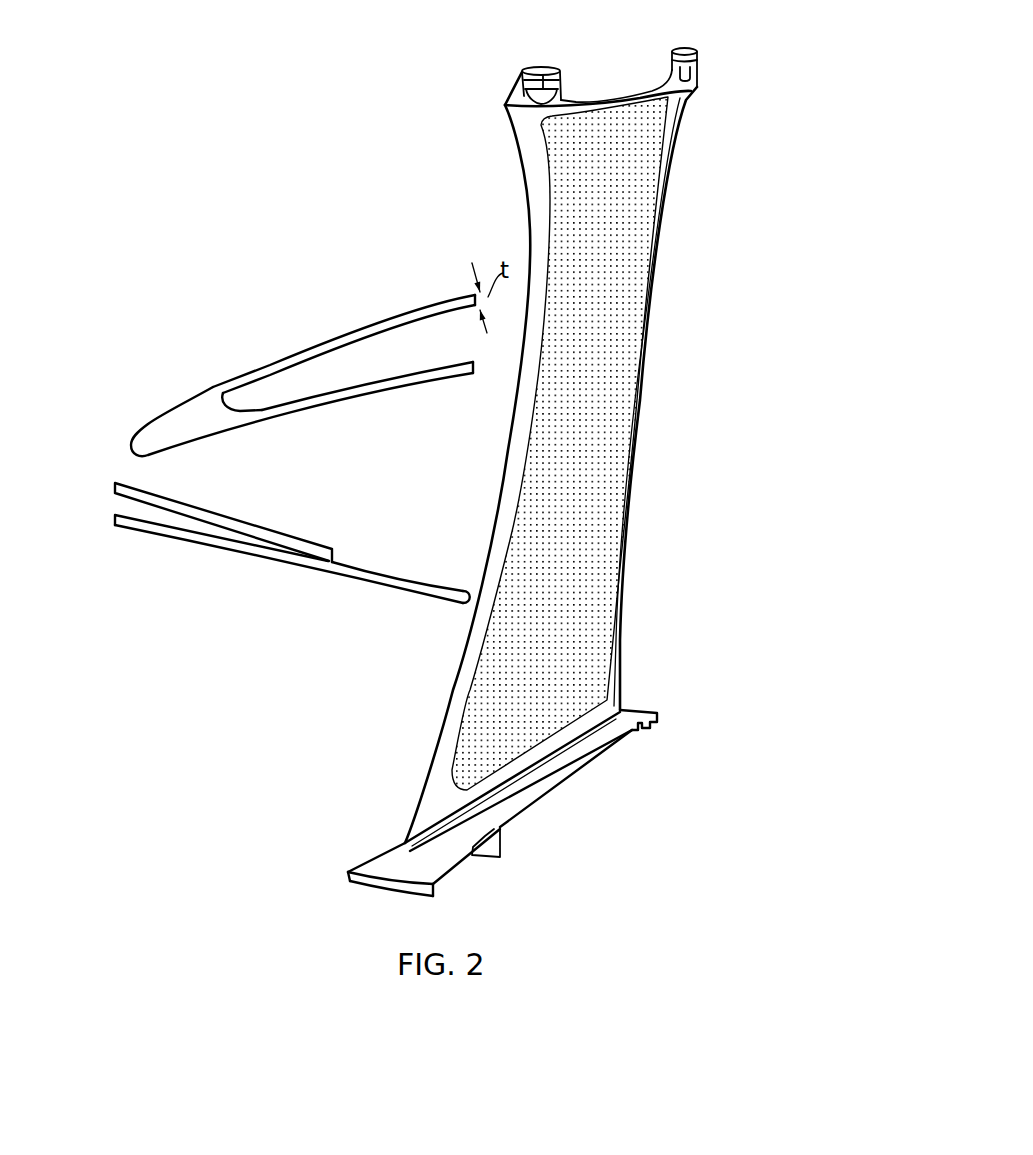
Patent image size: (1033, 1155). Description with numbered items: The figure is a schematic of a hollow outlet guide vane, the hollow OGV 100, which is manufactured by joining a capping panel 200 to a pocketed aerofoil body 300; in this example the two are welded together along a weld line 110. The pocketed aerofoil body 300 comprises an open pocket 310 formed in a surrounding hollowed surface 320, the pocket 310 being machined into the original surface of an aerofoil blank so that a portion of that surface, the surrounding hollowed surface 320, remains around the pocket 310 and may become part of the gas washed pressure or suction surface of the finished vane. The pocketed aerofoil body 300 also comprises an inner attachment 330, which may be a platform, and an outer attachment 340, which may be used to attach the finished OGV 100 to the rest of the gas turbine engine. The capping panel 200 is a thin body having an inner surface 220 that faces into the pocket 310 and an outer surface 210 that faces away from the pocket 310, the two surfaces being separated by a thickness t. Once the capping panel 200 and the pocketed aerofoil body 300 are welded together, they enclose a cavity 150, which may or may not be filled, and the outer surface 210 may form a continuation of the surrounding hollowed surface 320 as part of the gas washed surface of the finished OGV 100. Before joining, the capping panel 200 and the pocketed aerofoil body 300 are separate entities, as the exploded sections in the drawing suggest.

The hollow OGV 100 is at (730, 100).
The weld line 110 is at (613, 522).
The cavity 150 is at (435, 338).
The capping panel 200 is at (353, 323).
The outer surface 210 is at (237, 372).
The inner surface 220 is at (278, 372).
The pocketed aerofoil body 300 is at (155, 433).
The pocket 310 is at (348, 360).
The surrounding hollowed surface 320 is at (185, 393).
The inner attachment 330 is at (447, 857).
The outer attachment 340 is at (540, 69).